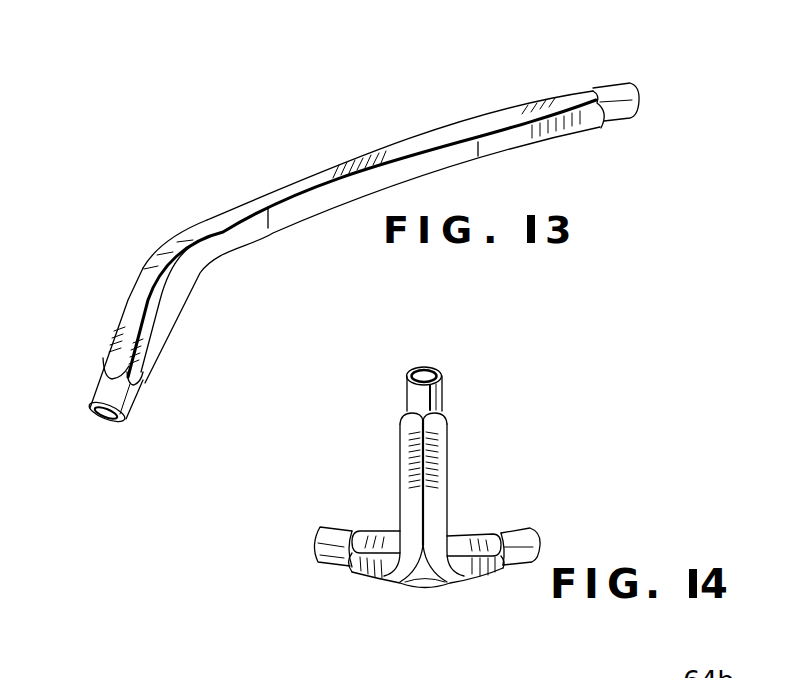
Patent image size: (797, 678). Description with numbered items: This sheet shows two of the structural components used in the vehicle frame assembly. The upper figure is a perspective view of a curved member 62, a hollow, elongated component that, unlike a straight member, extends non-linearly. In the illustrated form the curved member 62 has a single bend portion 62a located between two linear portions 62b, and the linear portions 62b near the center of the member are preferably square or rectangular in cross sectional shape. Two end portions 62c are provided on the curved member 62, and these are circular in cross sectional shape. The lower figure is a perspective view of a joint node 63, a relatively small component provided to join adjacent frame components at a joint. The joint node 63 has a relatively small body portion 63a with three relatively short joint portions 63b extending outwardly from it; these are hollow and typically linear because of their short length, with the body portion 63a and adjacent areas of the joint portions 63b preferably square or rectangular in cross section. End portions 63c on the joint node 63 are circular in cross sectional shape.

In FIG. 13, the curved member 62 is at (260, 168).
In FIG. 13, the bend portion 62a is at (157, 262).
In FIG. 13, the linear portions 62b is at (128, 330).
In FIG. 13, the end portions 62c is at (128, 408).
In FIG. 14, the joint node 63 is at (495, 433).
In FIG. 14, the body portion 63a is at (423, 585).
In FIG. 14, the joint portions 63b is at (413, 487).
In FIG. 14, the end portions 63c is at (435, 392).